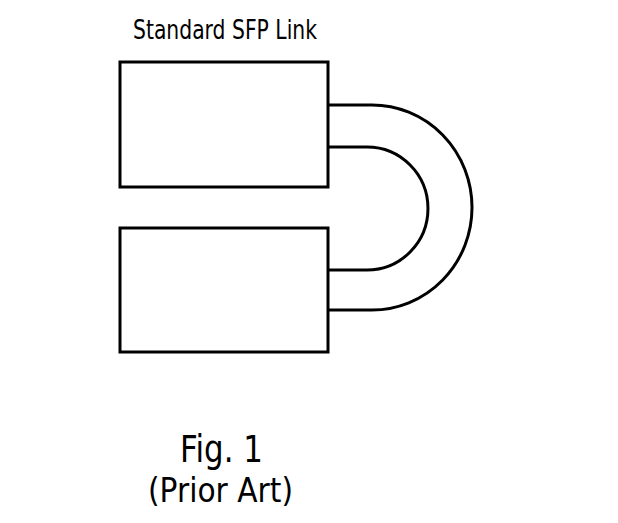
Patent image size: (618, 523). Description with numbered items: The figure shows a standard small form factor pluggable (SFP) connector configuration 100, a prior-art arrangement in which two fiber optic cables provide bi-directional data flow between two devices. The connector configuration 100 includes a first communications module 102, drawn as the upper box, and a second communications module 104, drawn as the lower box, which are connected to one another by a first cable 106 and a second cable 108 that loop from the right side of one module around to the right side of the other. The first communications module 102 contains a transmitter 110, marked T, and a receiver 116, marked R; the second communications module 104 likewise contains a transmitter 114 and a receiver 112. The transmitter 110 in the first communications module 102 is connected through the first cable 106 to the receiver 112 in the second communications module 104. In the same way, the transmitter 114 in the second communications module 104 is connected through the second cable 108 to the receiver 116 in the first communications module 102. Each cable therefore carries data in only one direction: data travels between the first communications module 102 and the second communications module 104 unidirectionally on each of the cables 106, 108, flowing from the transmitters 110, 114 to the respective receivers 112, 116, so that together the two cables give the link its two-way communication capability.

The standard small form factor pluggable (SFP) connector configuration 100 is at (473, 122).
The first communications module 102 is at (137, 123).
The second communications module 104 is at (137, 290).
The first cable 106 is at (473, 197).
The second cable 108 is at (428, 222).
The transmitter 110 is at (318, 98).
The receiver 116 is at (318, 140).
The transmitter 114 is at (315, 273).
The receiver 112 is at (315, 313).